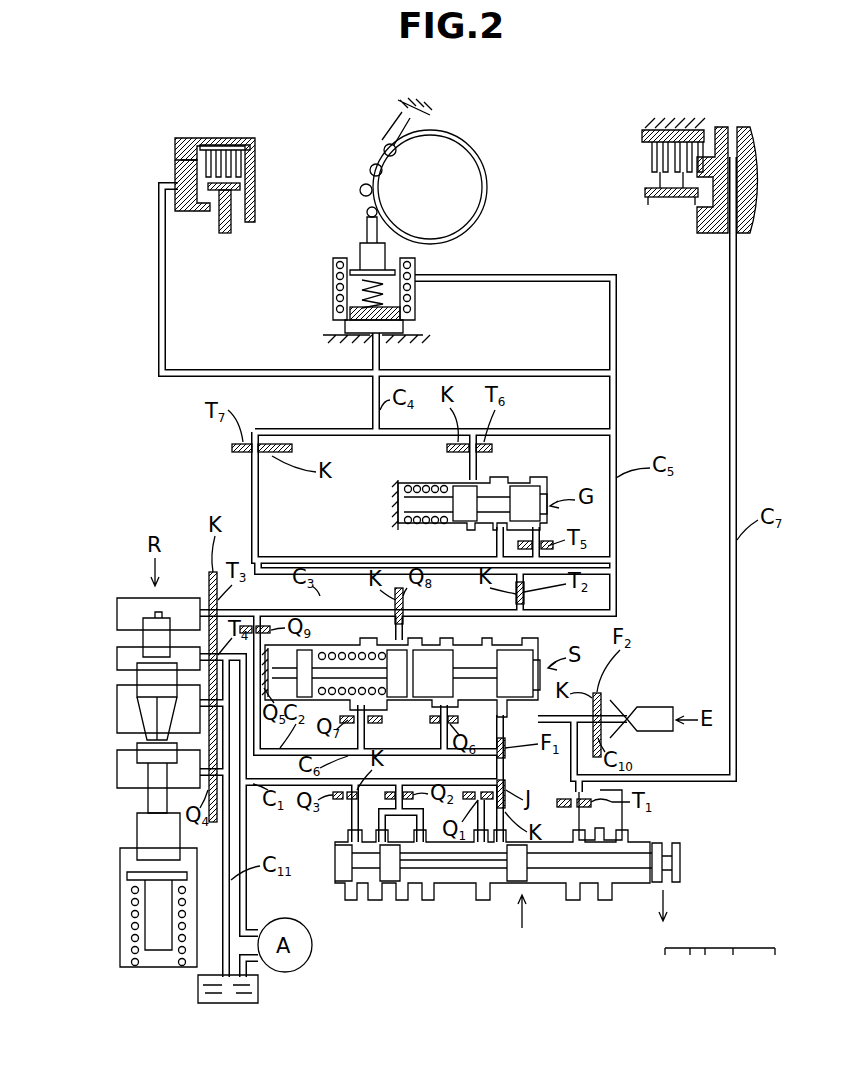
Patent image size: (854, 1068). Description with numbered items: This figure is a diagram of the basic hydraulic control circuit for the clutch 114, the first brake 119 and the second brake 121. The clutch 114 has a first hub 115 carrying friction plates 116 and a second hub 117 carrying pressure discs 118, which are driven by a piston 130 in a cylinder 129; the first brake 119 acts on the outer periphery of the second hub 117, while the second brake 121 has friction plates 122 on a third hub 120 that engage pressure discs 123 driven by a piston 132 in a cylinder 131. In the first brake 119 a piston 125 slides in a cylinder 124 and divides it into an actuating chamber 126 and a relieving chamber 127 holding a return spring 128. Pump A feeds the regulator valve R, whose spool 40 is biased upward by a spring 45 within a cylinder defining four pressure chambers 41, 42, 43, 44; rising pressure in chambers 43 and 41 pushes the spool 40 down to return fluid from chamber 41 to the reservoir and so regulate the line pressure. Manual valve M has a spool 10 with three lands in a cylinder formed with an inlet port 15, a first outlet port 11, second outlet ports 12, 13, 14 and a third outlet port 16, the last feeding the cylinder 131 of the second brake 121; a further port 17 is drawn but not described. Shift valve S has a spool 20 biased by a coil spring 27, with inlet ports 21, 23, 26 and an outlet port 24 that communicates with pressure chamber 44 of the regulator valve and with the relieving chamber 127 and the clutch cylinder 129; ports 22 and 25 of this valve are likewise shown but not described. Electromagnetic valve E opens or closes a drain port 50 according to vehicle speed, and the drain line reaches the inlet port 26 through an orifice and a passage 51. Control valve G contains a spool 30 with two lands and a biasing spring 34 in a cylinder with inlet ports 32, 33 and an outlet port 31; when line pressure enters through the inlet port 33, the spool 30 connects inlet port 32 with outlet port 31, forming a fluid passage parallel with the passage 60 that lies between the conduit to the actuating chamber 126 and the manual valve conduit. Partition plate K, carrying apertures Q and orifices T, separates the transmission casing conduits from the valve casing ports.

The spool 10 is at (462, 866).
The first outlet port 11 is at (352, 902).
The second outlet port 12 is at (376, 902).
The second outlet port 13 is at (402, 902).
The second outlet port 14 is at (428, 902).
The inlet port 15 is at (483, 902).
The third outlet port 16 is at (573, 902).
The port 17 is at (605, 902).
The spool 20 is at (404, 690).
The inlet port 21 is at (368, 638).
The port 22 is at (418, 640).
The inlet port 23 is at (455, 632).
The outlet port 24 is at (483, 656).
The port 25 is at (504, 703).
The inlet port 26 is at (536, 645).
The coil spring 27 is at (342, 652).
The spool 30 is at (470, 528).
The outlet port 31 is at (458, 476).
The inlet port 32 is at (500, 476).
The inlet port 33 is at (545, 478).
The biasing spring 34 is at (398, 500).
The spool 40 is at (152, 792).
The pressure chamber 41 is at (117, 766).
The pressure chamber 42 is at (117, 716).
The pressure chamber 43 is at (117, 660).
The pressure chamber 44 is at (117, 612).
The spring 45 is at (128, 920).
The drain port 50 is at (630, 712).
The passage 51 is at (597, 740).
The conduit 60 is at (258, 522).
The clutch 114 is at (225, 123).
The first hub 115 is at (231, 200).
The friction plates 116 is at (240, 186).
The second hub 117 is at (238, 142).
The pressure discs 118 is at (250, 152).
The first brake 119 is at (477, 133).
The third hub 120 is at (680, 208).
The second brake 121 is at (721, 114).
The friction plates 122 is at (652, 191).
The pressure discs 123 is at (652, 152).
The cylinder 124 is at (333, 262).
The piston 125 is at (417, 318).
The actuating chamber 126 is at (357, 332).
The relieving chamber 127 is at (400, 296).
The return spring 128 is at (334, 286).
The cylinder 129 is at (180, 178).
The piston 130 is at (183, 150).
The cylinder 131 is at (756, 200).
The piston 132 is at (740, 165).